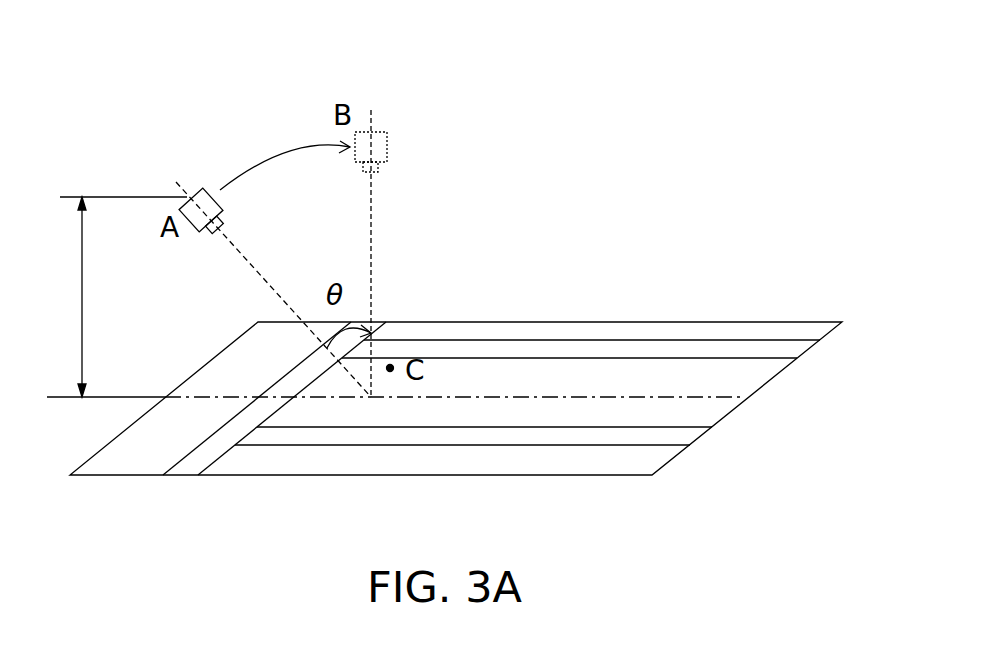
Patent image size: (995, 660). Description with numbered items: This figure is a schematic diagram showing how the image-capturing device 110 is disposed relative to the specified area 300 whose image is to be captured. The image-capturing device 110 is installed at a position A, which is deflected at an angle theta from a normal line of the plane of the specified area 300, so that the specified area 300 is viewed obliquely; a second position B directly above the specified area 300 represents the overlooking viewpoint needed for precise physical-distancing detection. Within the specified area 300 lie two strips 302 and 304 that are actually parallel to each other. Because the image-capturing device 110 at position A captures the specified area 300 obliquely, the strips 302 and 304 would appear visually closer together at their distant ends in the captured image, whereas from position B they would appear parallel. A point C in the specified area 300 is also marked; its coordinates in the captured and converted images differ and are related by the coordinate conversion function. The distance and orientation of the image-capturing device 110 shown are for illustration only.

The image-capturing device 110 is at (192, 190).
The specified area 300 is at (705, 407).
The strip 302 is at (783, 347).
The strip 304 is at (682, 437).